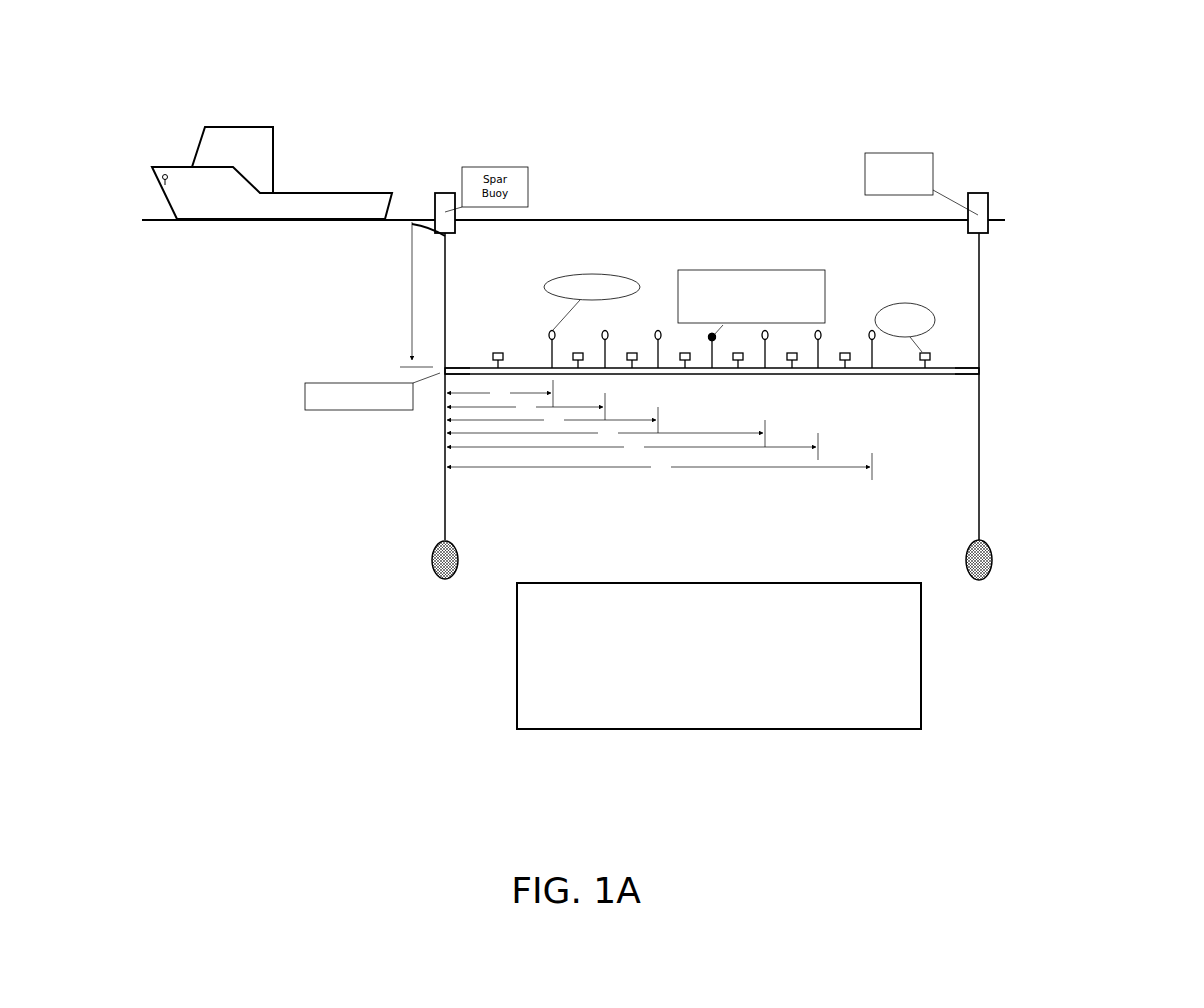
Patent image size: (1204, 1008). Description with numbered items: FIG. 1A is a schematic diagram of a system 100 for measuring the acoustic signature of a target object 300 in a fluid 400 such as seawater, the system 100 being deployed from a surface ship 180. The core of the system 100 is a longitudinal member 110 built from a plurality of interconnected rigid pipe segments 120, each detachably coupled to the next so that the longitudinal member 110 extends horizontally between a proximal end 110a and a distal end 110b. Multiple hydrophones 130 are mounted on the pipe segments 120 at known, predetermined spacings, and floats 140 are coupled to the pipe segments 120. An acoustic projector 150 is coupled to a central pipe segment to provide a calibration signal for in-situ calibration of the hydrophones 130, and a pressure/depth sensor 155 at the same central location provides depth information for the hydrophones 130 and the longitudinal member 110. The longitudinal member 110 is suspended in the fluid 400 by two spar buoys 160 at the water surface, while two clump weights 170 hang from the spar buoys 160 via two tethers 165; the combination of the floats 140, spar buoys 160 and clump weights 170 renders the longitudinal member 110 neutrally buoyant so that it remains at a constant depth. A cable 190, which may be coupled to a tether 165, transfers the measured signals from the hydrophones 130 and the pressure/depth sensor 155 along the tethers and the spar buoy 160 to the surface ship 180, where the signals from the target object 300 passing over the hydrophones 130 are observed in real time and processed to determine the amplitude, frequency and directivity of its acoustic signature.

The system 100 is at (1052, 138).
The longitudinal member 110 is at (957, 363).
The proximal end 110a is at (443, 373).
The distal end 110b is at (980, 368).
The pipe segments 120 is at (485, 367).
The hydrophones 130 is at (658, 332).
The floats 140 is at (845, 353).
The acoustic projector 150 is at (712, 337).
The pressure/depth sensor 155 is at (712, 337).
The spar buoys 160 is at (973, 202).
The tethers 165 is at (445, 493).
The clump weights 170 is at (975, 565).
The surface ship 180 is at (322, 200).
The cable 190 is at (412, 223).
The target object 300 is at (727, 658).
The fluid 400 is at (718, 540).